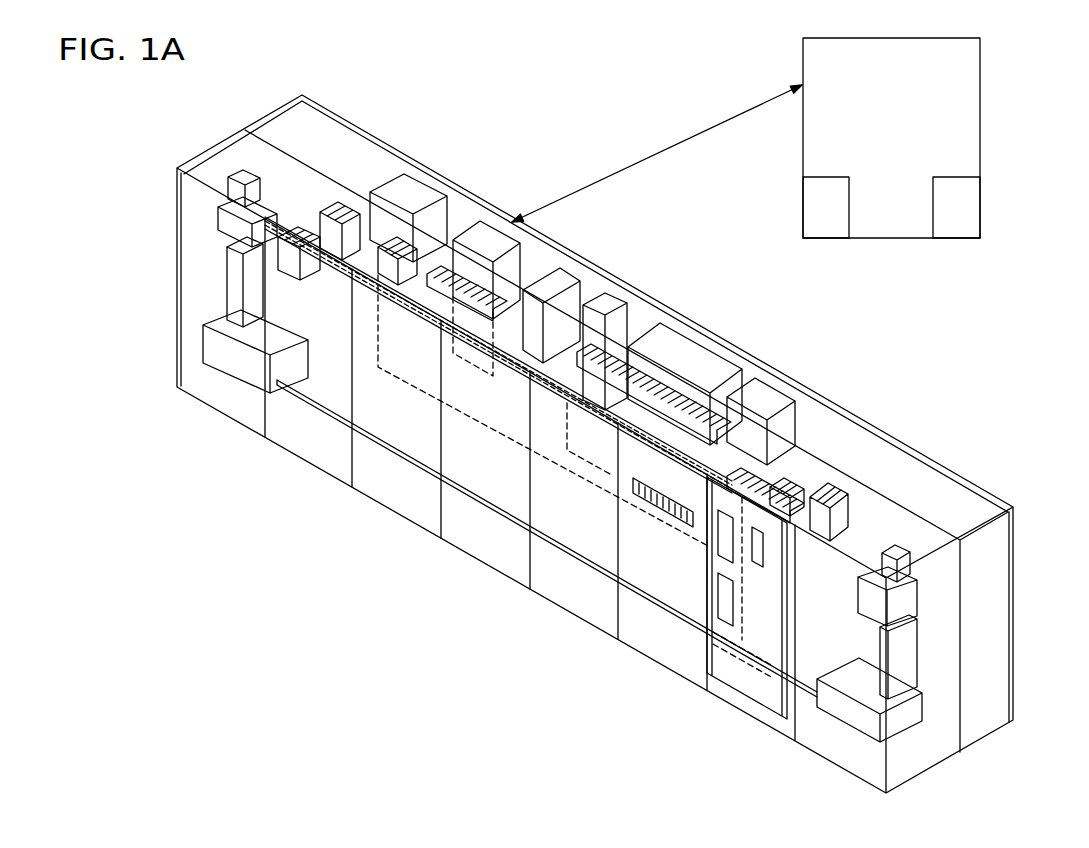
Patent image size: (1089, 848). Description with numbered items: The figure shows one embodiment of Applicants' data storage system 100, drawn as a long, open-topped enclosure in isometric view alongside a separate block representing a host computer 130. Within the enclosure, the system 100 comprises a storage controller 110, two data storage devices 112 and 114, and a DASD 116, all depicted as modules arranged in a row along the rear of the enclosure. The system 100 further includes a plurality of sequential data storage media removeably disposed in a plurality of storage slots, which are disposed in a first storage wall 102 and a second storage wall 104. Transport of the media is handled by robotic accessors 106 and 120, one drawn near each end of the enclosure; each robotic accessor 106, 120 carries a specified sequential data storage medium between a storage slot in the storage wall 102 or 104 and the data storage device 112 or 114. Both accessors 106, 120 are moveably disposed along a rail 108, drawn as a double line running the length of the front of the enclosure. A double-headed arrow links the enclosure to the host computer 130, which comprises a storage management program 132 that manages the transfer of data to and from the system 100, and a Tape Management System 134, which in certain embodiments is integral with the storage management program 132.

The data storage system 100 is at (490, 667).
The first storage wall 102 is at (417, 260).
The second storage wall 104 is at (393, 407).
The robotic accessor 106 is at (230, 232).
The rail 108 is at (483, 500).
The storage controller 110 is at (482, 232).
The data storage device 112 is at (560, 280).
The data storage device 114 is at (603, 305).
The DASD 116 is at (398, 178).
The robotic accessor 120 is at (908, 608).
The host computer 130 is at (904, 151).
The storage management program 132 is at (826, 207).
The Tape Management System 134 is at (956, 207).